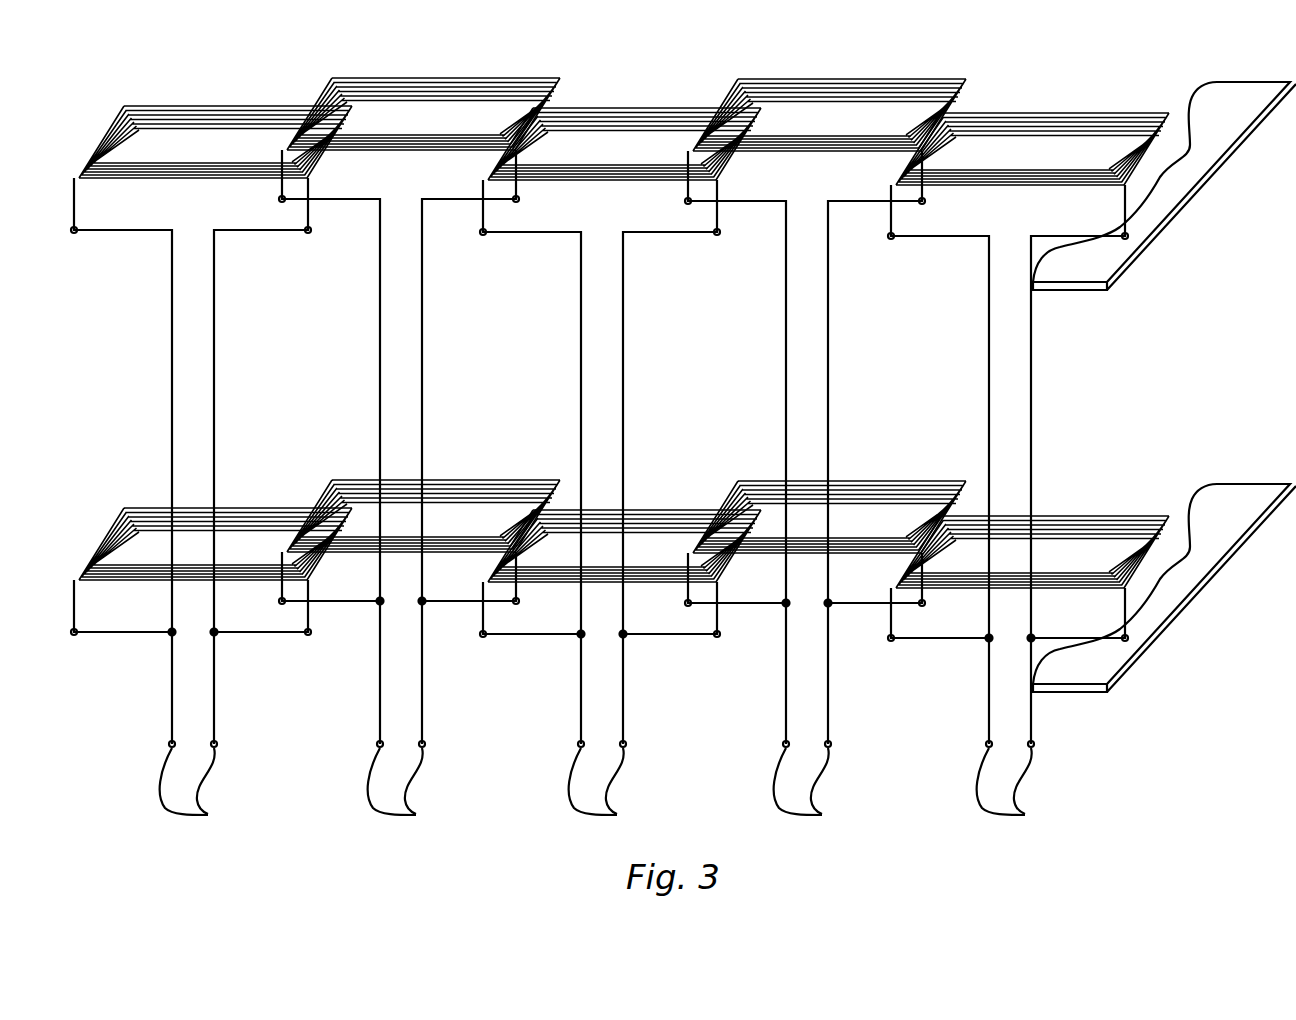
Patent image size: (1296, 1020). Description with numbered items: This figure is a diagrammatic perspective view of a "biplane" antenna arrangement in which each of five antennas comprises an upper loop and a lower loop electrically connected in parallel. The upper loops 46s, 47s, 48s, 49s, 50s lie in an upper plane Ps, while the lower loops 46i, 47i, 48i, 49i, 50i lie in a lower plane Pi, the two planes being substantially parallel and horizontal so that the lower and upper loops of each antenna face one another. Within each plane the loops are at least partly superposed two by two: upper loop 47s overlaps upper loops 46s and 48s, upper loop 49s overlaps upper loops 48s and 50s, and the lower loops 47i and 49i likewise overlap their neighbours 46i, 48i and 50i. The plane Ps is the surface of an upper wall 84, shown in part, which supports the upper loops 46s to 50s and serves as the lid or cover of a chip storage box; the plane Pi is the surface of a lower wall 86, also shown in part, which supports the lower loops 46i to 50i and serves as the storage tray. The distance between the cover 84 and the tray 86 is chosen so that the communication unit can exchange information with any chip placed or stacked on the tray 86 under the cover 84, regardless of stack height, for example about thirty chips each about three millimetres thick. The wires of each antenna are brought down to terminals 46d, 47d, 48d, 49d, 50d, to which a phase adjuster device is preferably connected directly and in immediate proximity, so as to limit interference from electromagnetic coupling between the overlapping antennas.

The upper loop 46s is at (196, 107).
The upper loop 47s is at (420, 79).
The upper loop 48s is at (622, 109).
The upper loop 49s is at (845, 80).
The upper loop 50s is at (1045, 112).
The lower loop 46i is at (250, 508).
The lower loop 47i is at (472, 481).
The lower loop 48i is at (672, 510).
The lower loop 49i is at (897, 482).
The lower loop 50i is at (1096, 514).
The antenna terminals 46d is at (211, 788).
The antenna terminals 47d is at (419, 788).
The antenna terminals 48d is at (620, 788).
The antenna terminals 49d is at (825, 788).
The antenna terminals 50d is at (1028, 788).
The upper plane Ps is at (1258, 177).
The lower plane Pi is at (1258, 579).
The upper wall 84 is at (1164, 186).
The lower wall 86 is at (1164, 588).